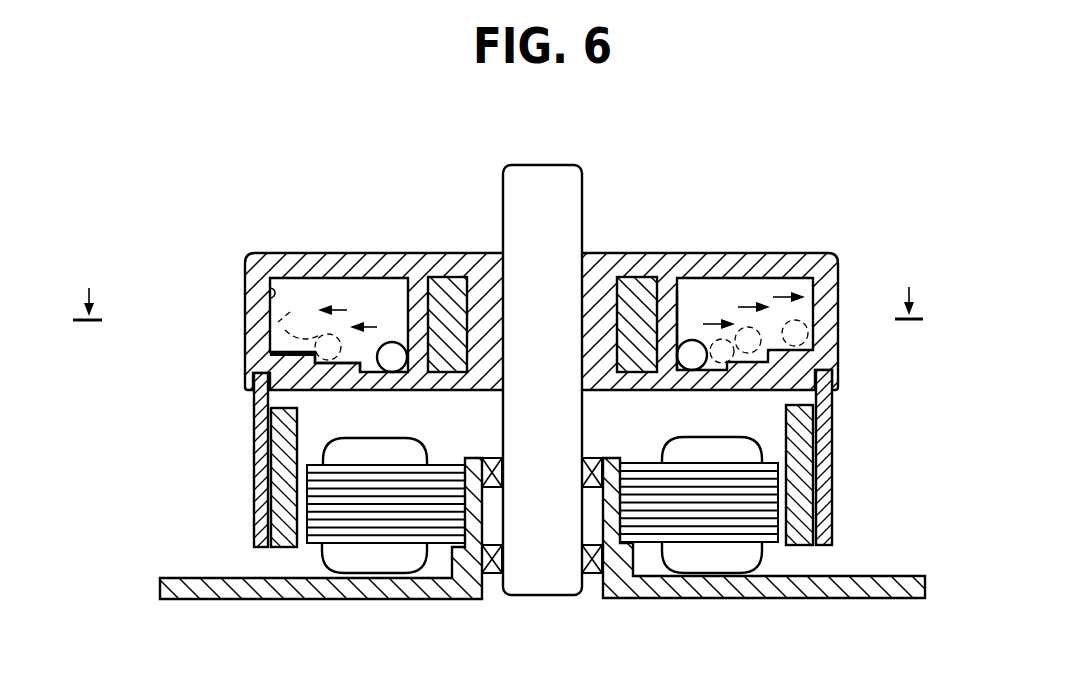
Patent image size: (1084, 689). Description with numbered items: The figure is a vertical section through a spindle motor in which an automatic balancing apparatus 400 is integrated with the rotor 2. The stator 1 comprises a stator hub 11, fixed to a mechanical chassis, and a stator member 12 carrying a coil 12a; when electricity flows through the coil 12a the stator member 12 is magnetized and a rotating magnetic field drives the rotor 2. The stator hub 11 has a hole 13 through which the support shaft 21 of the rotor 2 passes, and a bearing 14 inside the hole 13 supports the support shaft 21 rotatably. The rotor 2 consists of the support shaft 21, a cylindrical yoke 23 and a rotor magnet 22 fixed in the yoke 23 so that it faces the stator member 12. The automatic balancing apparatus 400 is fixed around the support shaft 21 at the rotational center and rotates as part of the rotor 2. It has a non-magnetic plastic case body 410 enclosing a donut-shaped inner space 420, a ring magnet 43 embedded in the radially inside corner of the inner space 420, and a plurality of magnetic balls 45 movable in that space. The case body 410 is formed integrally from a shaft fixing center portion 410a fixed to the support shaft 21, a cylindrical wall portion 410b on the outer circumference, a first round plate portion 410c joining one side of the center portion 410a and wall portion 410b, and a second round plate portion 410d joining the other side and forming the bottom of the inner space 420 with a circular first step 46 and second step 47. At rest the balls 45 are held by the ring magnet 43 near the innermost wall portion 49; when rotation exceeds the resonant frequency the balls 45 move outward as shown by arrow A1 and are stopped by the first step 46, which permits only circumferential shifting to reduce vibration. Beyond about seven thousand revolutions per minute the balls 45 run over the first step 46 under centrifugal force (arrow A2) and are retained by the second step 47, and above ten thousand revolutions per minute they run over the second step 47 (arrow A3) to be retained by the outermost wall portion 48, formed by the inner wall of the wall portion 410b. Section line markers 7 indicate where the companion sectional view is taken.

The automatic balancing apparatus 400 is at (838, 228).
The case body 410 is at (530, 298).
The shaft fixing (center portion) 410a is at (483, 283).
The cylindrical wall portion 410b is at (253, 308).
The first round plate portion 410c is at (260, 253).
The second round plate portion 410d is at (310, 383).
The inner space 420 is at (290, 312).
The ring magnet 43 is at (622, 283).
The magnetic balls 45 is at (338, 333).
The first step 46 is at (358, 356).
The second step 47 is at (270, 353).
The outermost wall portion 48 is at (268, 285).
The innermost wall portion 49 is at (677, 288).
The support shaft 21 is at (557, 165).
The rotor 2 is at (535, 458).
The rotor magnet 22 is at (805, 517).
The cylindrical yoke 23 is at (831, 474).
The stator 1 is at (300, 569).
The stator hub 11 is at (760, 583).
The stator member 12 is at (772, 543).
The coil 12a is at (677, 537).
The hole 13 is at (492, 545).
The bearing 14 is at (593, 580).
The section line of FIG. 7 is at (498, 321).
The arrow A1 is at (712, 322).
The arrow A2 is at (745, 305).
The arrow A3 is at (786, 295).